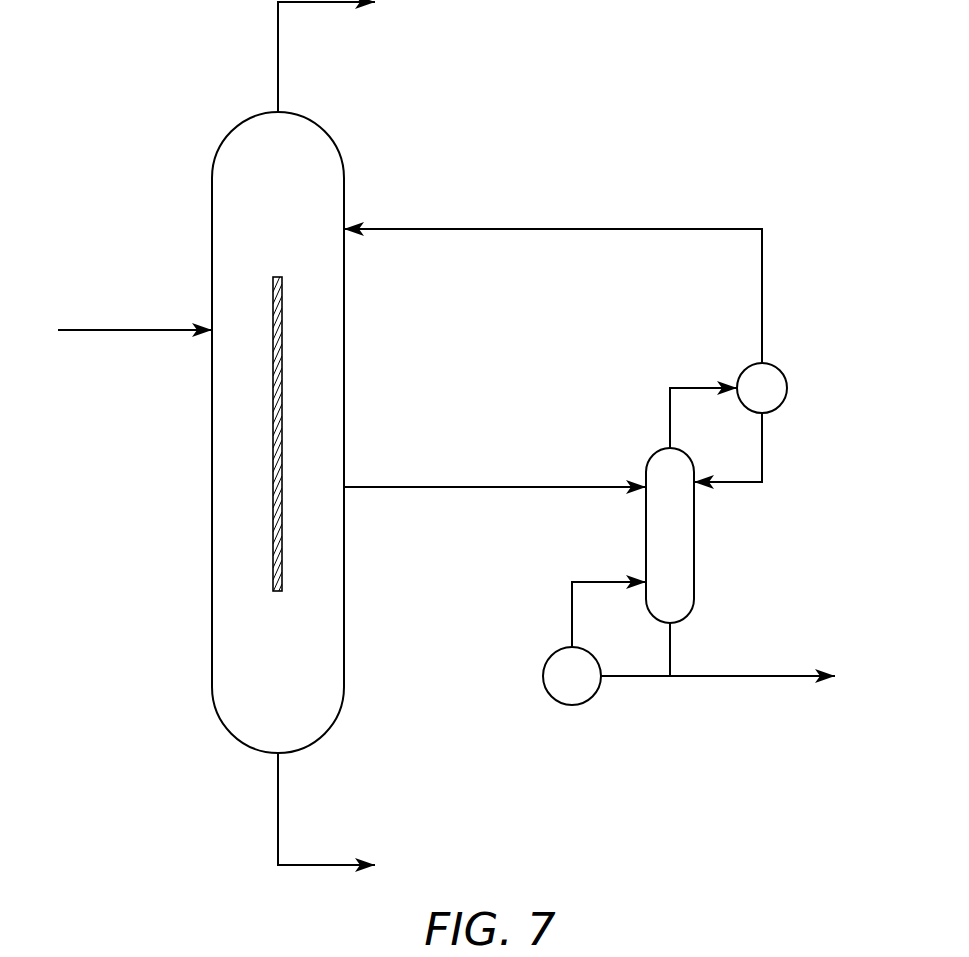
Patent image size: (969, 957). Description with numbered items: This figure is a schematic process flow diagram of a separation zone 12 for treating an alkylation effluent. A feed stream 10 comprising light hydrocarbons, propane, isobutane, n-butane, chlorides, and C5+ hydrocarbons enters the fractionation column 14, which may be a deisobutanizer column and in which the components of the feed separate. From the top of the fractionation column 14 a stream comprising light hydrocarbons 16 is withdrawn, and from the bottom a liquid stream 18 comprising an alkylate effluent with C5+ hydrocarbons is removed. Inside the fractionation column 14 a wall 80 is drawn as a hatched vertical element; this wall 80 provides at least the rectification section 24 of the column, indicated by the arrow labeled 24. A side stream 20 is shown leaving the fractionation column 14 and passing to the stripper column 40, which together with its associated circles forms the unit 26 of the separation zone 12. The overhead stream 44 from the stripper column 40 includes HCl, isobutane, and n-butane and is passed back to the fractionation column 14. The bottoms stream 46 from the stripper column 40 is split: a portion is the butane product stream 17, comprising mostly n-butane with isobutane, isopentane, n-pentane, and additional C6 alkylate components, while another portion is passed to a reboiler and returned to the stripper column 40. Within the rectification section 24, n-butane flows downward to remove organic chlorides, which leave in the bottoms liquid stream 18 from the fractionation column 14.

The separation zone 12 is at (811, 136).
The fractionation column 14 is at (330, 138).
The stream comprising light hydrocarbons 16 is at (278, 50).
The liquid stream 18 is at (278, 798).
The feed stream 10 is at (137, 327).
The wall 80 is at (275, 395).
The side draw stream line 20 is at (496, 485).
The rectification section 24 is at (326, 461).
The overhead stream 44 is at (617, 228).
The side separation unit 26 is at (689, 594).
The stripper column 40 is at (645, 540).
The bottoms stream 46 is at (670, 645).
The butane product stream 17 is at (750, 678).